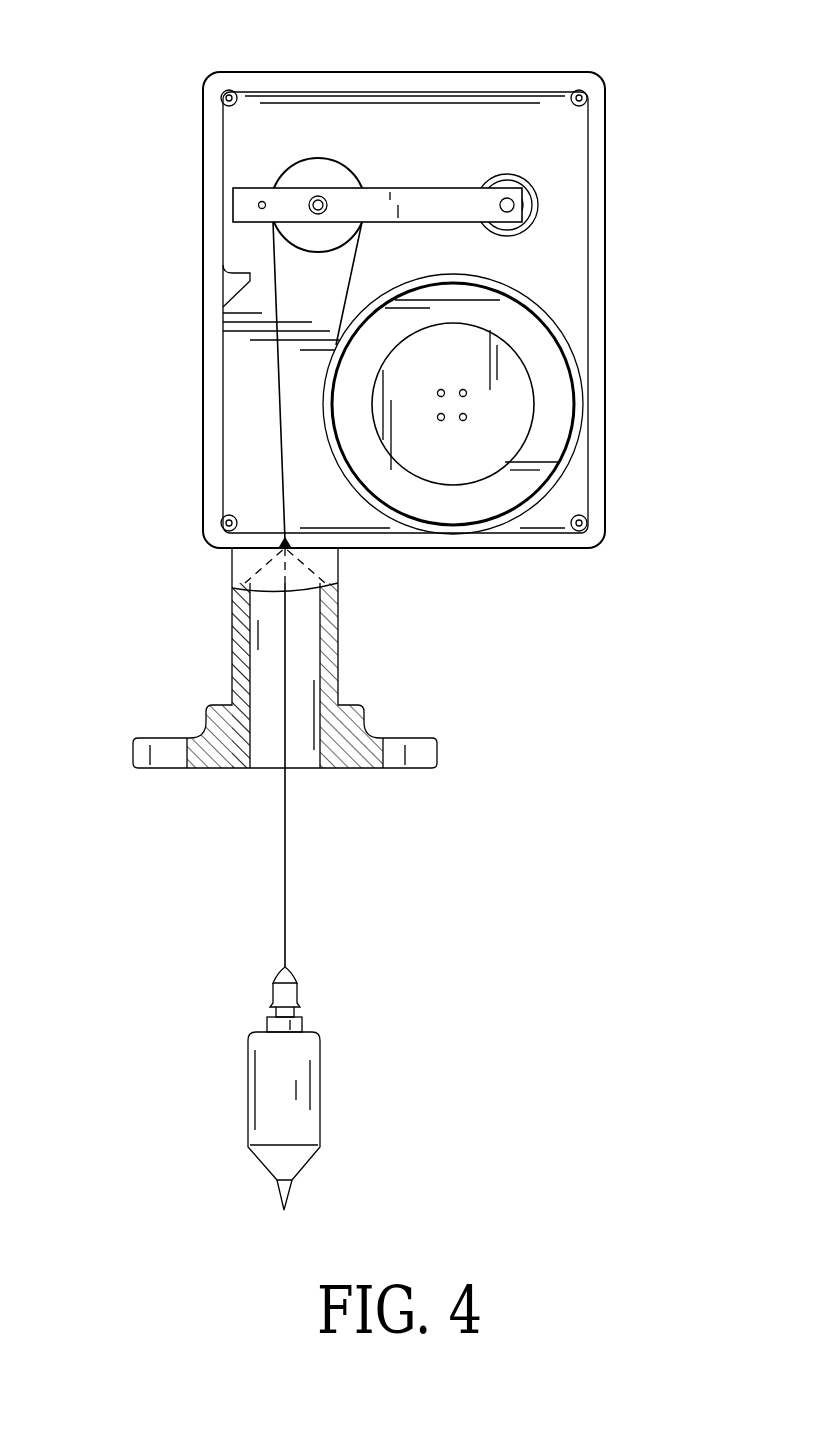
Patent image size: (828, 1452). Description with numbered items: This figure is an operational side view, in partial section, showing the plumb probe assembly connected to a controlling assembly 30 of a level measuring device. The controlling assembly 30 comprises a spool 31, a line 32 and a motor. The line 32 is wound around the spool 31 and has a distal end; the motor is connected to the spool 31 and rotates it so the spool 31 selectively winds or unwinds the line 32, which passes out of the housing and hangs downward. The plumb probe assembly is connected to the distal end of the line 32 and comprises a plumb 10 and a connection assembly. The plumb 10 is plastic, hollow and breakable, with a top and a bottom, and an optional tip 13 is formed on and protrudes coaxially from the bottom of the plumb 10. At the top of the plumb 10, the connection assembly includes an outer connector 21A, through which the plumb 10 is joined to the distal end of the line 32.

The controlling assembly 30 is at (195, 74).
The spool 31 is at (500, 500).
The line 32 is at (280, 423).
The outer connector 21A is at (298, 990).
The plumb 10 is at (304, 1132).
The tip 13 is at (290, 1188).